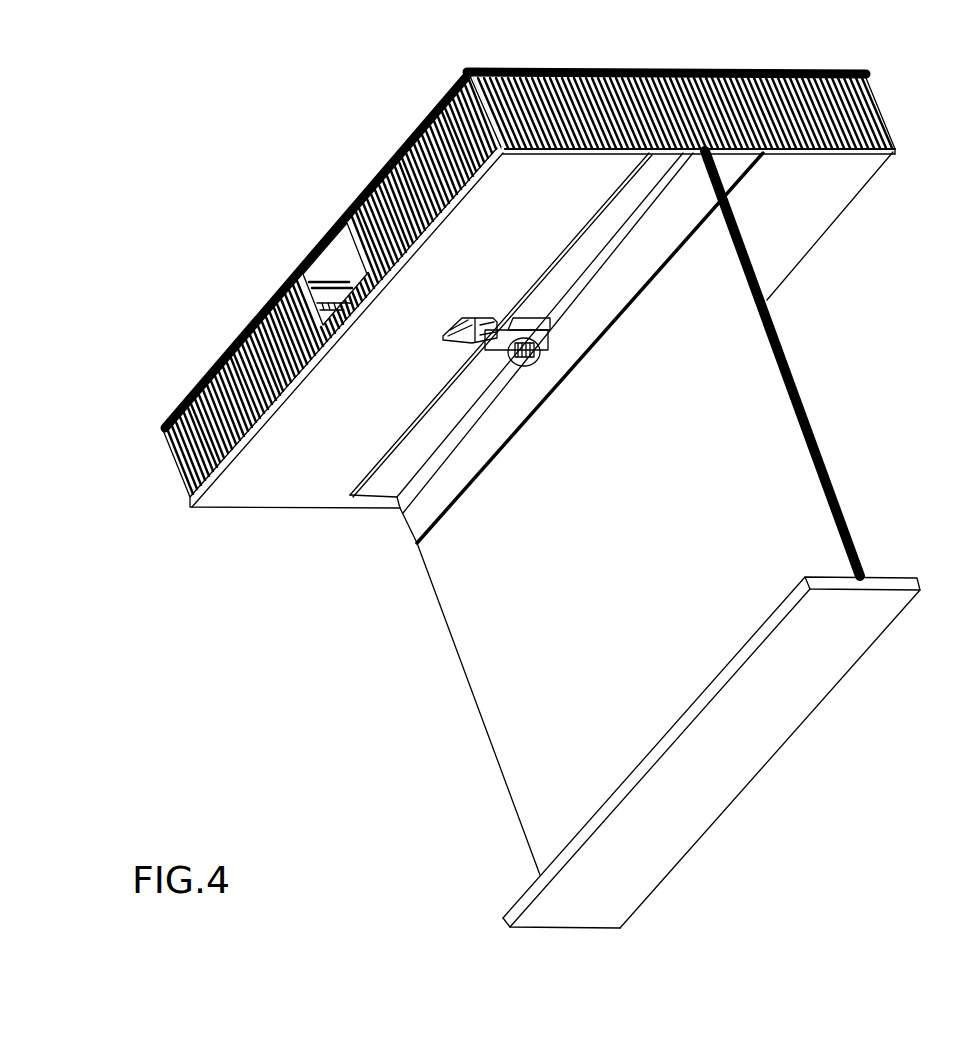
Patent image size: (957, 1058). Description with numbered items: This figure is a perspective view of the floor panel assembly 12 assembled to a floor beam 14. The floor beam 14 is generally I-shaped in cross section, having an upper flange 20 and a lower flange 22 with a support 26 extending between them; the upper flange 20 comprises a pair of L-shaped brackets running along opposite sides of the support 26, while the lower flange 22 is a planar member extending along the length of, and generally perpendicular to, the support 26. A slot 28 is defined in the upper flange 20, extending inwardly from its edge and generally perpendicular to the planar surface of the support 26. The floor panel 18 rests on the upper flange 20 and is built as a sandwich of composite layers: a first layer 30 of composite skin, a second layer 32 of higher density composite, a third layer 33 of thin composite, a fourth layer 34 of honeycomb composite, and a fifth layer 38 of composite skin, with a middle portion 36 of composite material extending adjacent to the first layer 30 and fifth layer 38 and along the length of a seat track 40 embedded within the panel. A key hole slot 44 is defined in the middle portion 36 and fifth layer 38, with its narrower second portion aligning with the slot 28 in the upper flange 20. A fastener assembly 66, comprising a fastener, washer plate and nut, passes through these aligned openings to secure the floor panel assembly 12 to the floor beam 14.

The floor panel assembly 12 is at (180, 365).
The floor beam 14 is at (457, 655).
The floor panel 18 is at (583, 58).
The upper flange 20 is at (731, 175).
The lower flange 22 is at (858, 625).
The support 26 is at (800, 398).
The slot 28 is at (483, 343).
The first layer 30 is at (722, 70).
The second layer 32 is at (452, 80).
The third layer 33 is at (390, 160).
The fourth layer 34 is at (858, 120).
The middle portion 36 is at (290, 283).
The fifth layer 38 is at (215, 493).
The seat track 40 is at (332, 276).
The key hole slot 44 is at (428, 337).
The fastener assembly 66 is at (523, 368).